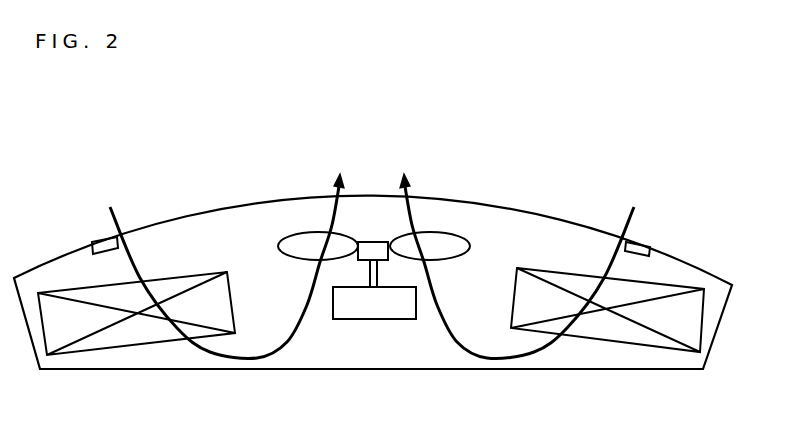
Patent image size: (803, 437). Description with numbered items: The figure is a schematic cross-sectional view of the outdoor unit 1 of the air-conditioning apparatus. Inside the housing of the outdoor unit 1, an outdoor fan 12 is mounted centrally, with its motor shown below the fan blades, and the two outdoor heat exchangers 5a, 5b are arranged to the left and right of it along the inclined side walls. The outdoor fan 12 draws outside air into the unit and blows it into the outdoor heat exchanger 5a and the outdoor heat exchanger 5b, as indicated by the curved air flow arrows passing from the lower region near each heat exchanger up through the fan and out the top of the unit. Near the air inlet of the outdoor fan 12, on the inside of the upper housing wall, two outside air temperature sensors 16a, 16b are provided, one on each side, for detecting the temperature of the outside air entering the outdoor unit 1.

The outdoor unit 1 is at (695, 258).
The outdoor heat exchanger 5a is at (92, 342).
The outdoor heat exchanger 5b is at (652, 330).
The outdoor fan 12 is at (373, 317).
The outside air temperature sensor 16a is at (97, 242).
The outside air temperature sensor 16b is at (642, 242).